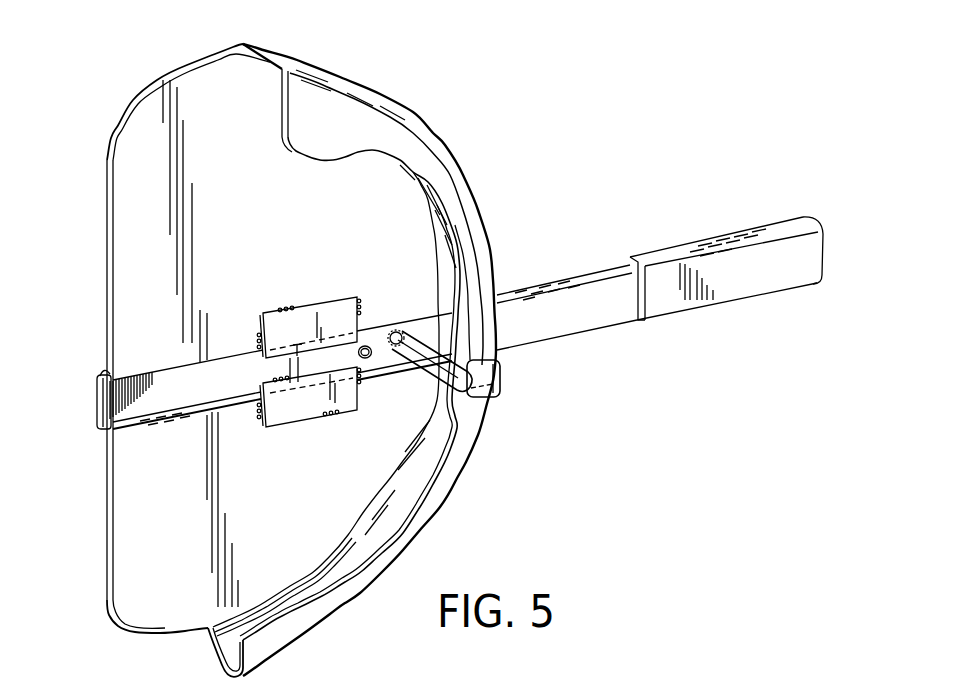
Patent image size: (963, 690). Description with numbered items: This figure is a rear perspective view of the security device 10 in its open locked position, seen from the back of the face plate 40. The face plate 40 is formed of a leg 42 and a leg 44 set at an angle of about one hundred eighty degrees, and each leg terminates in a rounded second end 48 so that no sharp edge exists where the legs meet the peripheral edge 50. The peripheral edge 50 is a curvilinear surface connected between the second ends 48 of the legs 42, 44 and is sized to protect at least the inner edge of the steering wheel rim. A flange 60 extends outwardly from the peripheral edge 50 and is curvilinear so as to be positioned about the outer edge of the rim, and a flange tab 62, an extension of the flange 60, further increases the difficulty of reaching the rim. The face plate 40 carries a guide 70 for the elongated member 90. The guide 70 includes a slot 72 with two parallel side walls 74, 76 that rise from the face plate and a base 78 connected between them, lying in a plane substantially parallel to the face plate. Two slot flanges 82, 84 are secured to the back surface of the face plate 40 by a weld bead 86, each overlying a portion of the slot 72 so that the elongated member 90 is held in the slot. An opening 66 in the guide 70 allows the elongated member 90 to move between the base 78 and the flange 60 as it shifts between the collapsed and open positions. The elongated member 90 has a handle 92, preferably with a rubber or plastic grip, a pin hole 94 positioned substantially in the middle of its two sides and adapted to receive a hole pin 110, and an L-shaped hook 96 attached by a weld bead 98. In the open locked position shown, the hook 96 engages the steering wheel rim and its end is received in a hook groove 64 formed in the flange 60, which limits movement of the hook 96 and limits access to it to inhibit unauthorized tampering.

The security device 10 is at (508, 119).
The face plate 40 is at (116, 256).
The leg 42 is at (128, 135).
The leg 44 is at (118, 568).
The second end 48 is at (187, 63).
The peripheral edge 50 is at (297, 58).
The flange 60 is at (323, 72).
The flange tab 62 is at (318, 142).
The hook groove 64 is at (495, 378).
The opening 66 is at (450, 313).
The guide 70 is at (98, 403).
The slot 72 is at (203, 387).
The side wall 74 is at (102, 430).
The side wall 76 is at (104, 369).
The base 78 is at (99, 382).
The slot flange 82 is at (303, 315).
The slot flange 84 is at (315, 410).
The weld bead 86 is at (277, 308).
The elongated member 90 is at (593, 266).
The handle 92 is at (737, 237).
The pin hole 94 is at (363, 360).
The hook 96 is at (460, 383).
The weld bead 98 is at (392, 330).
The hole pin 110 is at (370, 355).